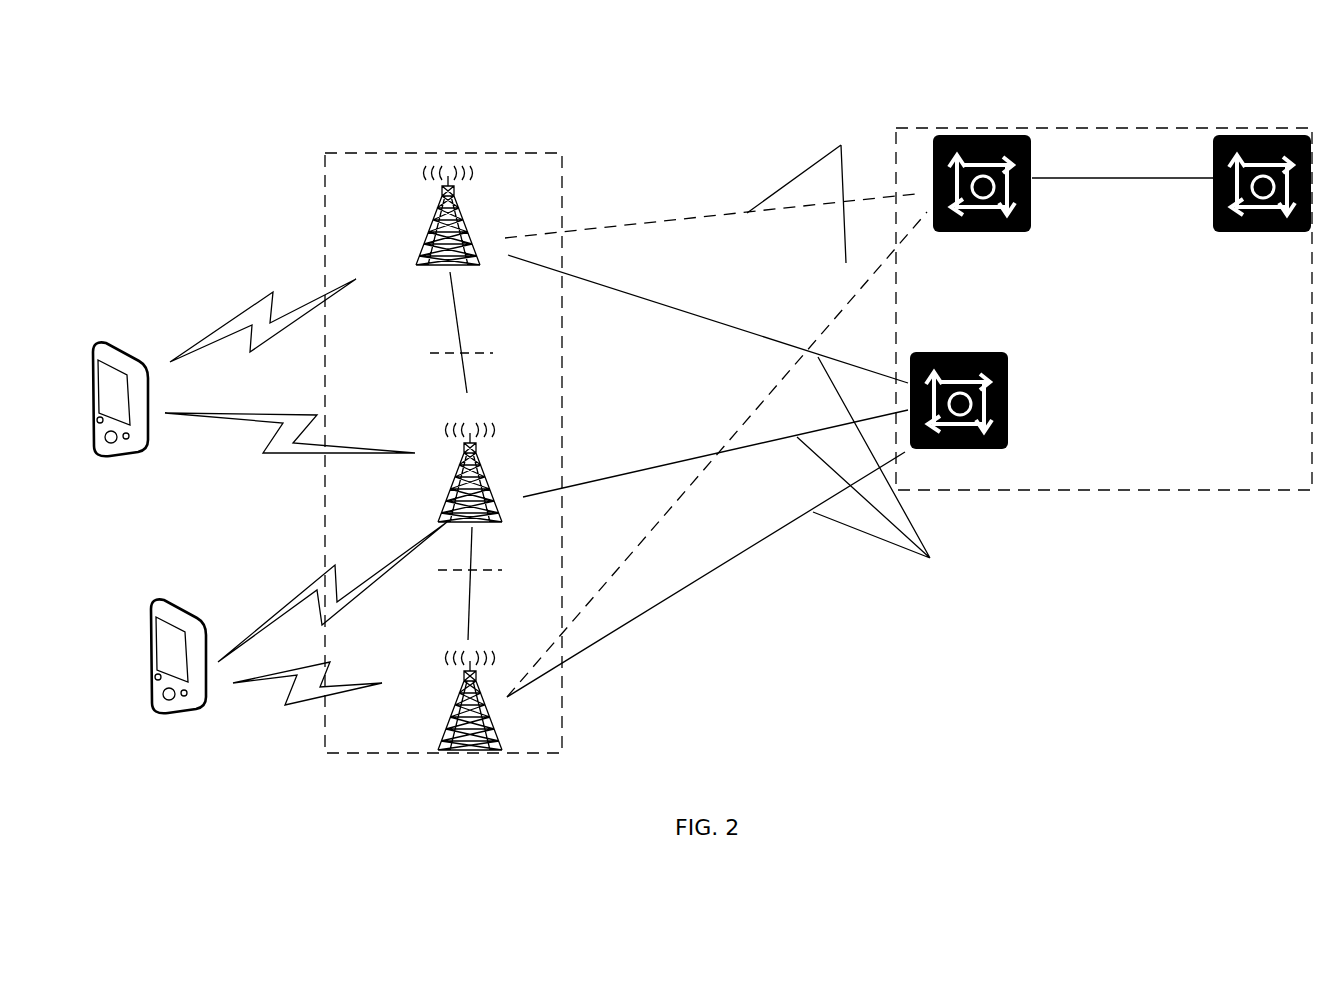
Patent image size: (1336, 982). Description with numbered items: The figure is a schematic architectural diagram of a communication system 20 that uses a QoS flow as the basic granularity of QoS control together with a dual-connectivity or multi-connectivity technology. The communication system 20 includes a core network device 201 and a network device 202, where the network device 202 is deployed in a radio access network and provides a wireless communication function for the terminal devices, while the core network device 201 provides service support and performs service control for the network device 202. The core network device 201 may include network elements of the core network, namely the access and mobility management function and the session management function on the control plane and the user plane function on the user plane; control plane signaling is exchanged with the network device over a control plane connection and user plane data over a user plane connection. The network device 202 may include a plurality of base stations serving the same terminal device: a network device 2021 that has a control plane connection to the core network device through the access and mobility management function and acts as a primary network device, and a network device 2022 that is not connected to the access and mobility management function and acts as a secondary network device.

The communication system 20 is at (900, 60).
The core network device 201 is at (1102, 128).
The network device 202 is at (455, 155).
The network device 2021 is at (430, 247).
The network device 2022 is at (448, 505).